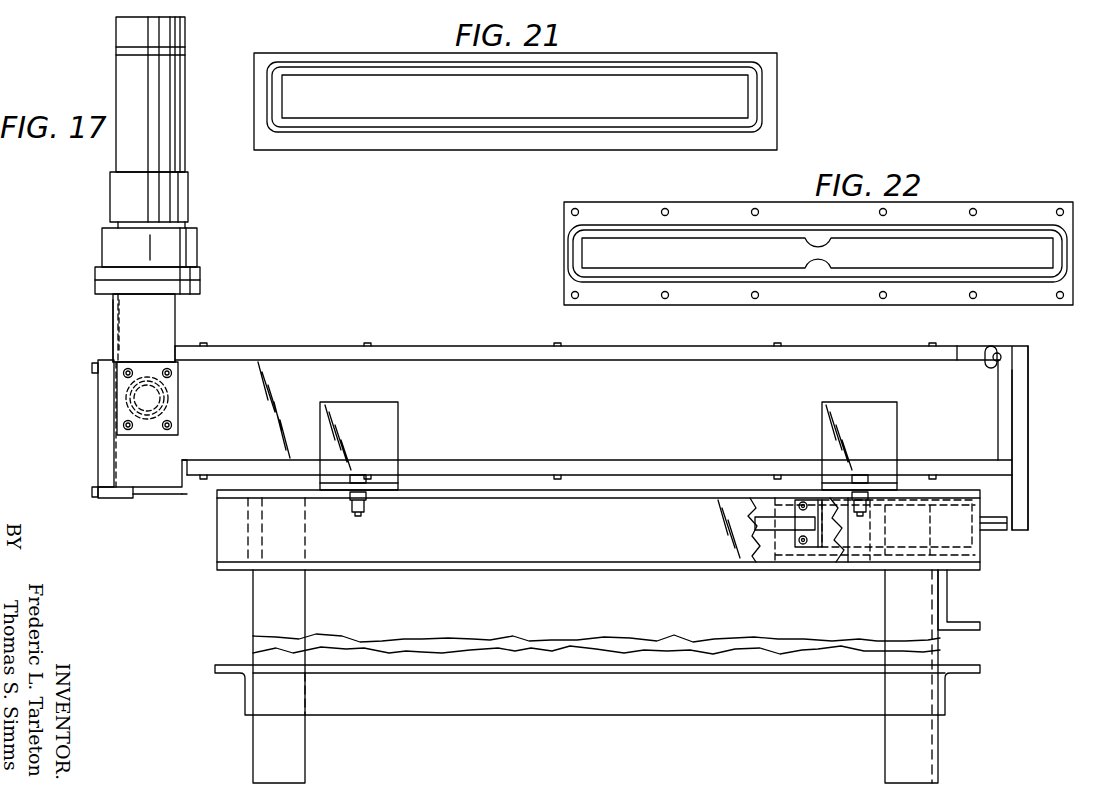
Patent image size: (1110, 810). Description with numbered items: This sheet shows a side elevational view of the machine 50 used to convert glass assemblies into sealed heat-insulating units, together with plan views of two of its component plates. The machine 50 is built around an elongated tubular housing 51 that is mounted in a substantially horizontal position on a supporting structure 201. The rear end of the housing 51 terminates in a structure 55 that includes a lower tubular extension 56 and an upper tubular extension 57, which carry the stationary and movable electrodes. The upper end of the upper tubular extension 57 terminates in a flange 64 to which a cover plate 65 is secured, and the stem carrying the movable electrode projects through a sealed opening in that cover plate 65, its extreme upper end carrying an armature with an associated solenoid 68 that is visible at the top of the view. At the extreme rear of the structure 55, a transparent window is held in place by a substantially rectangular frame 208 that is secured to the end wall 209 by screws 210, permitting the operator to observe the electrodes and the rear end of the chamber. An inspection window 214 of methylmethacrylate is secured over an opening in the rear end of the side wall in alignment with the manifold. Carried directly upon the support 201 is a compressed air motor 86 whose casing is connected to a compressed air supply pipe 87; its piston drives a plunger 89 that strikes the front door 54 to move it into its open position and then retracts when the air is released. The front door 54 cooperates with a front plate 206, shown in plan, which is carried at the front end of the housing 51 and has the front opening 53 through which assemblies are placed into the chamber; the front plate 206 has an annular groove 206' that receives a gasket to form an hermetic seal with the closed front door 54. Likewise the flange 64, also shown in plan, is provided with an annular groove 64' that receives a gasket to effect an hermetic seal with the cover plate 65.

In FIG. 17, the solenoid 68 is at (186, 118).
In FIG. 17, the cover plate 65 is at (198, 265).
In FIG. 17, the flange 64 is at (170, 277).
In FIG. 22, the flange 64 is at (834, 253).
In FIG. 17, the upper tubular extension 57 is at (175, 340).
In FIG. 17, the end wall 209 is at (116, 322).
In FIG. 17, the structure 55 is at (118, 350).
In FIG. 17, the inspection window 214 is at (178, 398).
In FIG. 17, the frame 208 is at (98, 450).
In FIG. 17, the screws 210 is at (92, 368).
In FIG. 17, the lower tubular extension 56 is at (144, 494).
In FIG. 17, the housing 51 is at (482, 388).
In FIG. 17, the machine 50 is at (318, 332).
In FIG. 17, the front plate 206 is at (983, 450).
In FIG. 21, the front plate 206 is at (543, 101).
In FIG. 17, the front door 54 is at (1030, 430).
In FIG. 17, the supporting structure 201 is at (598, 570).
In FIG. 17, the compressed air supply pipe 87 is at (762, 535).
In FIG. 17, the motor 86 is at (842, 540).
In FIG. 17, the plunger 89 is at (1000, 530).
In FIG. 21, the front opening 53 is at (650, 77).
In FIG. 21, the annular groove 206' is at (515, 75).
In FIG. 22, the annular groove 64' is at (817, 227).